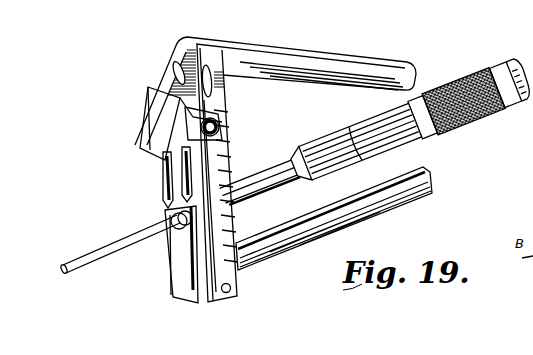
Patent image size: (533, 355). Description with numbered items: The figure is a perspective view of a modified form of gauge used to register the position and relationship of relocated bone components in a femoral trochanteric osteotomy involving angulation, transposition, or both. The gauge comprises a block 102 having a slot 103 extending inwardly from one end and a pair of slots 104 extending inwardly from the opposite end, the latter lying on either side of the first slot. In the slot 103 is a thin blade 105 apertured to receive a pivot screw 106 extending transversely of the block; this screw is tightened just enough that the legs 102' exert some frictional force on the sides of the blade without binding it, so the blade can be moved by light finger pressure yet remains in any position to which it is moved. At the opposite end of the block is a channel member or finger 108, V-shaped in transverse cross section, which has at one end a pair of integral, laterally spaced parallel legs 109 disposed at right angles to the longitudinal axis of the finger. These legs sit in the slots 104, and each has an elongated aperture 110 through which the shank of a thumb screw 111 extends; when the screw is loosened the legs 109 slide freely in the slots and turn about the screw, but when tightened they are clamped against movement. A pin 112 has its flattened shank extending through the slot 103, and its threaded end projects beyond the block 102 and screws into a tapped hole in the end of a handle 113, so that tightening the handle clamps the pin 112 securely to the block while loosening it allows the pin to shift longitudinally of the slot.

The block 102 is at (214, 173).
The legs 102' is at (180, 262).
The slot 103 is at (182, 250).
The slots 104 is at (182, 185).
The blade 105 is at (390, 196).
The pivot screw 106 is at (231, 287).
The channel member or finger 108 is at (358, 72).
The legs 109 is at (150, 148).
The elongated aperture 110 is at (175, 72).
The thumb screw 111 is at (219, 127).
The pin 112 is at (87, 258).
The handle 113 is at (458, 121).